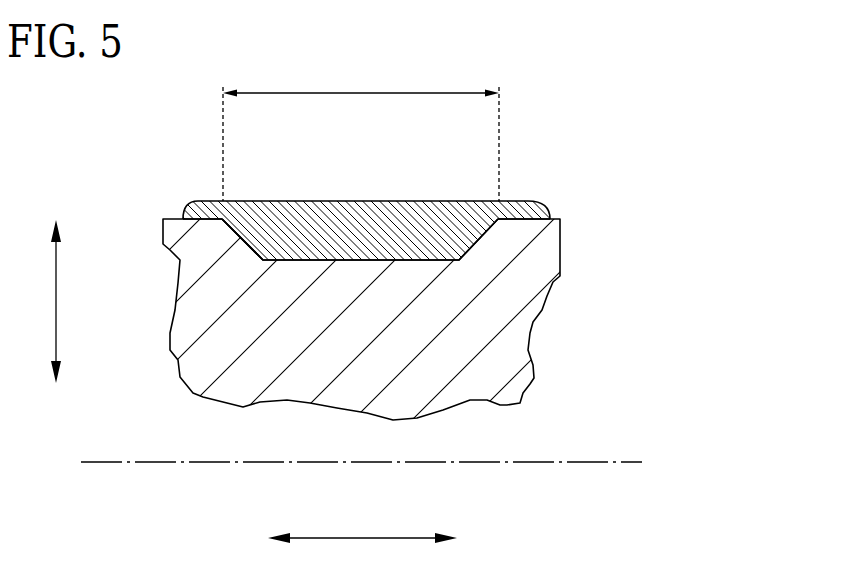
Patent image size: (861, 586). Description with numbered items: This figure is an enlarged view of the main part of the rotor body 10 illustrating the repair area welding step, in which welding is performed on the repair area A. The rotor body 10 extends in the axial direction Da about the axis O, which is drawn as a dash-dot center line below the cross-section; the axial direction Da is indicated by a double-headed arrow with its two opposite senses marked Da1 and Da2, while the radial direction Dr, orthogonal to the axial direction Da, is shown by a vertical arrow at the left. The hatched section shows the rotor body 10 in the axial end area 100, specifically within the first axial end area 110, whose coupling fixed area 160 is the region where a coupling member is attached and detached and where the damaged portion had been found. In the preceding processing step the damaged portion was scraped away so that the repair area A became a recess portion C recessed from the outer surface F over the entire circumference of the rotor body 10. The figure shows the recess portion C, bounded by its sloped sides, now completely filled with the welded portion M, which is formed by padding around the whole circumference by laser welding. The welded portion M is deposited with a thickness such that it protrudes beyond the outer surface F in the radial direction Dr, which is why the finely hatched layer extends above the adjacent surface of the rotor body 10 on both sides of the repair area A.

The rotor body 10 is at (548, 255).
The coupling fixed area 160 is at (466, 157).
The first axial end area 110 is at (366, 197).
The axial end area 100 is at (366, 197).
The outer surface F is at (552, 217).
The welded portion M is at (392, 225).
The recess portion C is at (249, 243).
The repair area A is at (361, 129).
The radial direction Dr is at (40, 301).
The axial direction Da is at (362, 548).
The first axial direction Da1 is at (482, 537).
The second axial direction Da2 is at (244, 537).
The axis O is at (619, 460).